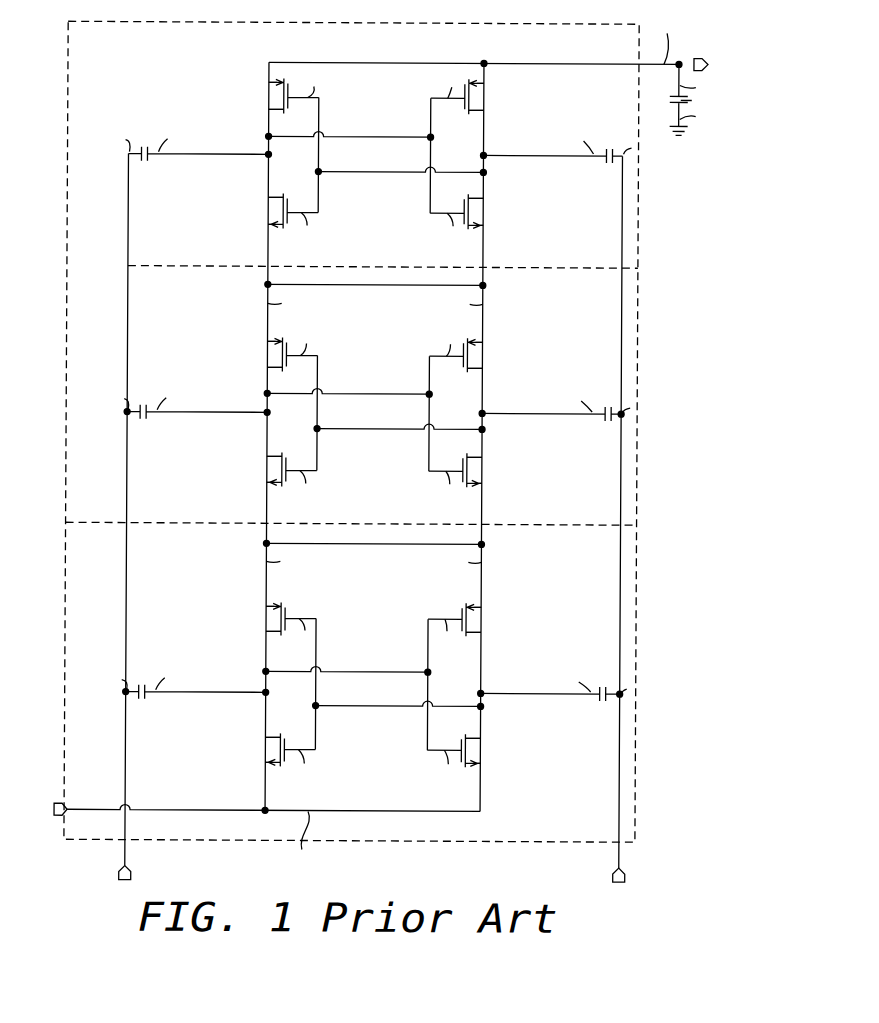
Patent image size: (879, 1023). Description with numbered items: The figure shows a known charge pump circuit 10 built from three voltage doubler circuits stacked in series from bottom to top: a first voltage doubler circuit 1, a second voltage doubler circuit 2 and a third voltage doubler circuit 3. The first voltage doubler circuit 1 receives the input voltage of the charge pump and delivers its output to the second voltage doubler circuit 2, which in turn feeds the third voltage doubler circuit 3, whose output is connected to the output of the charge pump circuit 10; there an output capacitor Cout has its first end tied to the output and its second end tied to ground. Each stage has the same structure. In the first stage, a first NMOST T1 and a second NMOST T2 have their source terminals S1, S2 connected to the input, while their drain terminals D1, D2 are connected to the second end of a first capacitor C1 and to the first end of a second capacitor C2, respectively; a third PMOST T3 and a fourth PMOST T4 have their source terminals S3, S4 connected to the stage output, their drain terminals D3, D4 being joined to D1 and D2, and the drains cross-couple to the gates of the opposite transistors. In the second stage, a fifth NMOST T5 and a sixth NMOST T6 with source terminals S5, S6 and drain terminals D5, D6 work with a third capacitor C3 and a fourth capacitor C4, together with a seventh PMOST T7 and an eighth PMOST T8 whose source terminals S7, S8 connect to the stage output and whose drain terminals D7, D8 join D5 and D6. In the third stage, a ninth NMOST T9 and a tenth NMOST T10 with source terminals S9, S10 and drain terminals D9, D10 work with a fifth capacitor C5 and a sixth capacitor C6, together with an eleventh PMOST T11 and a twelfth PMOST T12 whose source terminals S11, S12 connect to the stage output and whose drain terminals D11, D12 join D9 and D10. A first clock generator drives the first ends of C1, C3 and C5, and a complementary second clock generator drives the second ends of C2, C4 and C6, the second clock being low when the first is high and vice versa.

The charge pump circuit 10 is at (651, 852).
The first voltage doubler circuit 1 is at (380, 679).
The second voltage doubler circuit 2 is at (367, 412).
The third voltage doubler circuit 3 is at (387, 156).
The first NMOST T1 is at (282, 749).
The second NMOST T2 is at (462, 750).
The third PMOST T3 is at (283, 618).
The fourth PMOST T4 is at (463, 619).
The fifth NMOST T5 is at (285, 469).
The sixth NMOST T6 is at (465, 470).
The seventh PMOST T7 is at (286, 354).
The eighth PMOST T8 is at (466, 355).
The ninth NMOST T9 is at (286, 210).
The tenth NMOST T10 is at (470, 211).
The eleventh PMOST T11 is at (288, 95).
The twelfth PMOST T12 is at (472, 96).
The first capacitor C1 is at (183, 678).
The second capacitor C2 is at (564, 681).
The third capacitor C3 is at (185, 398).
The fourth capacitor C4 is at (565, 401).
The fifth capacitor C5 is at (186, 140).
The sixth capacitor C6 is at (566, 142).
The output capacitor Cout is at (710, 101).
The source terminal of first NMOST S1 is at (272, 764).
The source terminal of second NMOST S2 is at (478, 764).
The source terminal of third PMOST S3 is at (267, 598).
The source terminal of fourth PMOST S4 is at (482, 598).
The source terminal of fifth NMOST S5 is at (272, 484).
The source terminal of sixth NMOST S6 is at (478, 484).
The source terminal of seventh PMOST S7 is at (273, 342).
The source terminal of eighth PMOST S8 is at (477, 343).
The source terminal of ninth NMOST S9 is at (272, 226).
The source terminal of tenth NMOST S10 is at (478, 226).
The source terminal of eleventh PMOST S11 is at (273, 83).
The source terminal of twelfth PMOST S12 is at (477, 84).
The drain terminal of first NMOST D1 is at (272, 738).
The drain terminal of second NMOST D2 is at (477, 738).
The drain terminal of third PMOST D3 is at (267, 650).
The drain terminal of fourth PMOST D4 is at (482, 650).
The drain terminal of fifth NMOST D5 is at (272, 457).
The drain terminal of sixth NMOST D6 is at (477, 457).
The drain terminal of seventh PMOST D7 is at (272, 369).
The drain terminal of eighth PMOST D8 is at (477, 369).
The drain terminal of ninth NMOST D9 is at (272, 198).
The drain terminal of tenth NMOST D10 is at (477, 198).
The drain terminal of eleventh PMOST D11 is at (270, 111).
The drain terminal of twelfth PMOST D12 is at (477, 111).